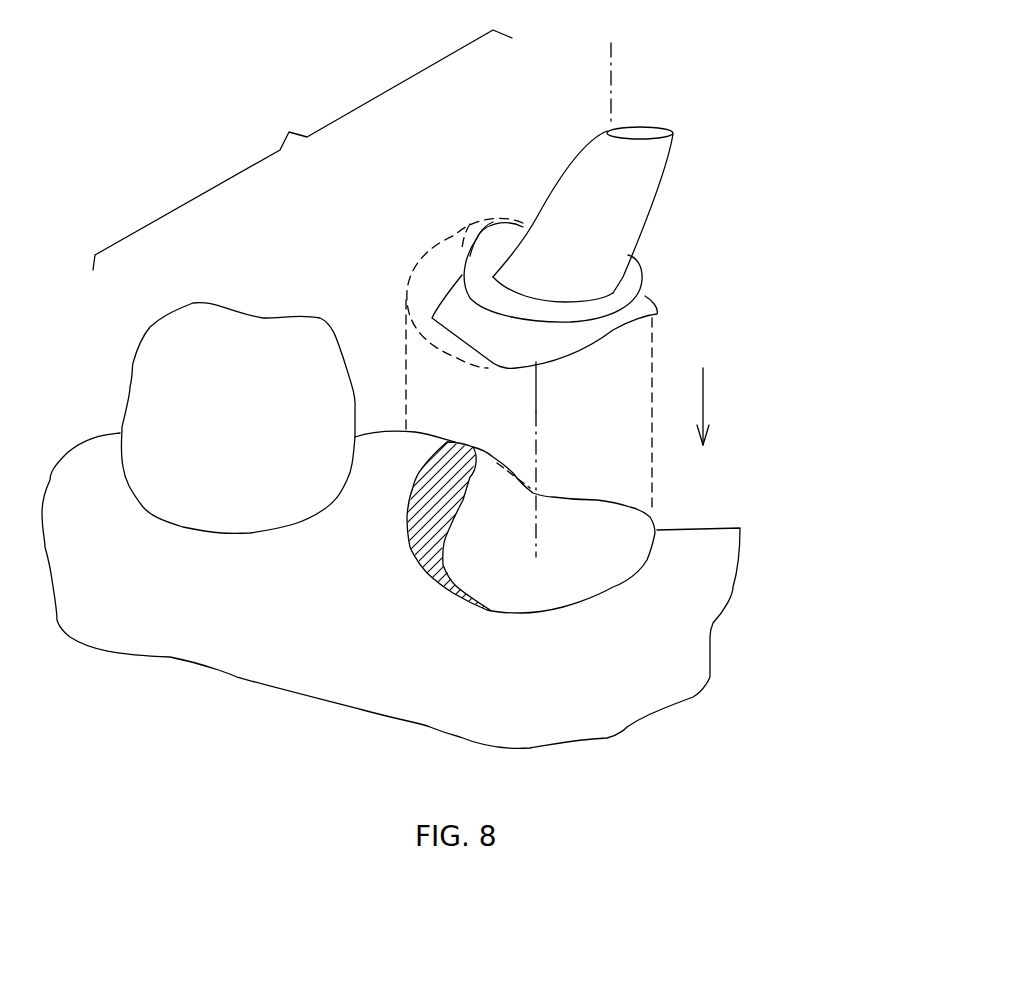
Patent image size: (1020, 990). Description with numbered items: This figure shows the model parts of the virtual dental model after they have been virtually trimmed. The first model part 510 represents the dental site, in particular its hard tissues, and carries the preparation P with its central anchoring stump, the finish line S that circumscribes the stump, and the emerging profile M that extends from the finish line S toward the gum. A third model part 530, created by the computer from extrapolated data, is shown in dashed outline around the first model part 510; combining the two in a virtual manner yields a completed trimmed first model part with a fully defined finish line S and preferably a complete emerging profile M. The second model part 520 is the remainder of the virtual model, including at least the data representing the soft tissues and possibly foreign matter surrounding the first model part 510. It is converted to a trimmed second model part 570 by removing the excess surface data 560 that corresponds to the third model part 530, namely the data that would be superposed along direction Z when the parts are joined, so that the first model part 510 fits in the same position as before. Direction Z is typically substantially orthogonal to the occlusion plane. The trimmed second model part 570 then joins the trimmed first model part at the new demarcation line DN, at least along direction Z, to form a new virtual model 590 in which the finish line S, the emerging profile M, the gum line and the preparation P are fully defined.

The new virtual model 590 is at (302, 150).
The second model part 520 is at (642, 205).
The preparation P is at (633, 198).
The finish line S is at (645, 278).
The emerging profile M is at (642, 303).
The first model part 510 is at (617, 325).
The third model part 530 is at (467, 227).
The direction Z is at (712, 406).
The trimmed second model part 570 is at (705, 543).
The excess surface data 560 is at (523, 510).
The new demarcation line DN is at (428, 582).